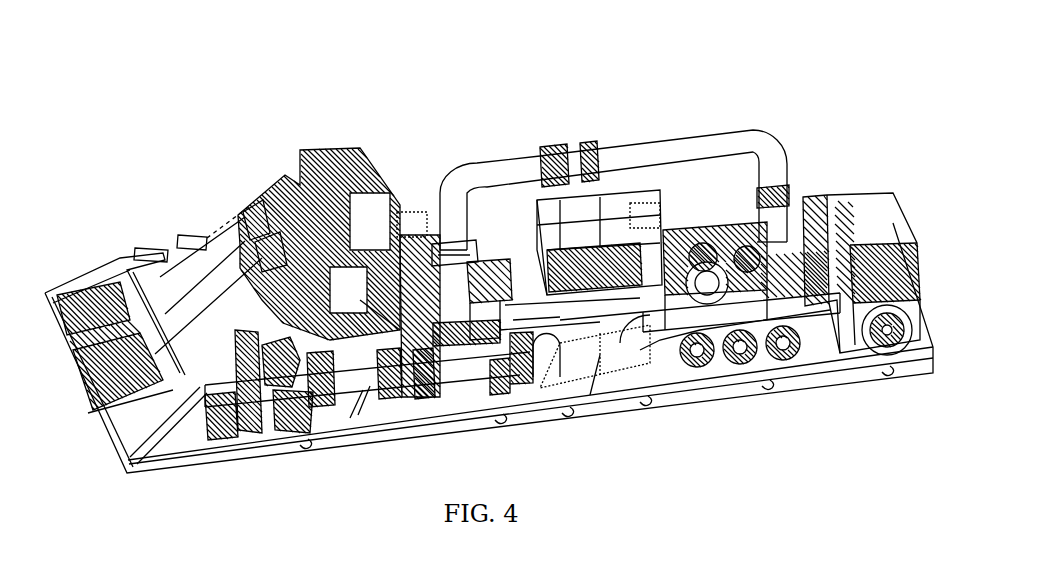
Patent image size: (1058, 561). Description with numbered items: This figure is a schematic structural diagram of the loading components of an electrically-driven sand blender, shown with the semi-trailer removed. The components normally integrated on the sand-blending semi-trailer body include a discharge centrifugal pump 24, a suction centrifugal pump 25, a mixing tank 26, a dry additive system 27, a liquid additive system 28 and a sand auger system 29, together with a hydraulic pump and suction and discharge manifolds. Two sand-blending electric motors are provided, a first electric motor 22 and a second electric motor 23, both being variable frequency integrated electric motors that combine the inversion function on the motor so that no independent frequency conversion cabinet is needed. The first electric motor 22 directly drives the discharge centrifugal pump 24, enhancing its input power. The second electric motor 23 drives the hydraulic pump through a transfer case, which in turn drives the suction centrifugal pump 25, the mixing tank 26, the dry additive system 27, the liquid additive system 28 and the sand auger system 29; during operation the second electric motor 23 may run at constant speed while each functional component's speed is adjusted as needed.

The first electric motor 22 is at (573, 240).
The second electric motor 23 is at (842, 240).
The discharge centrifugal pump 24 is at (453, 257).
The suction centrifugal pump 25 is at (523, 313).
The mixing tank 26 is at (310, 157).
The dry additive system 27 is at (410, 243).
The liquid additive system 28 is at (237, 380).
The sand auger system 29 is at (167, 365).